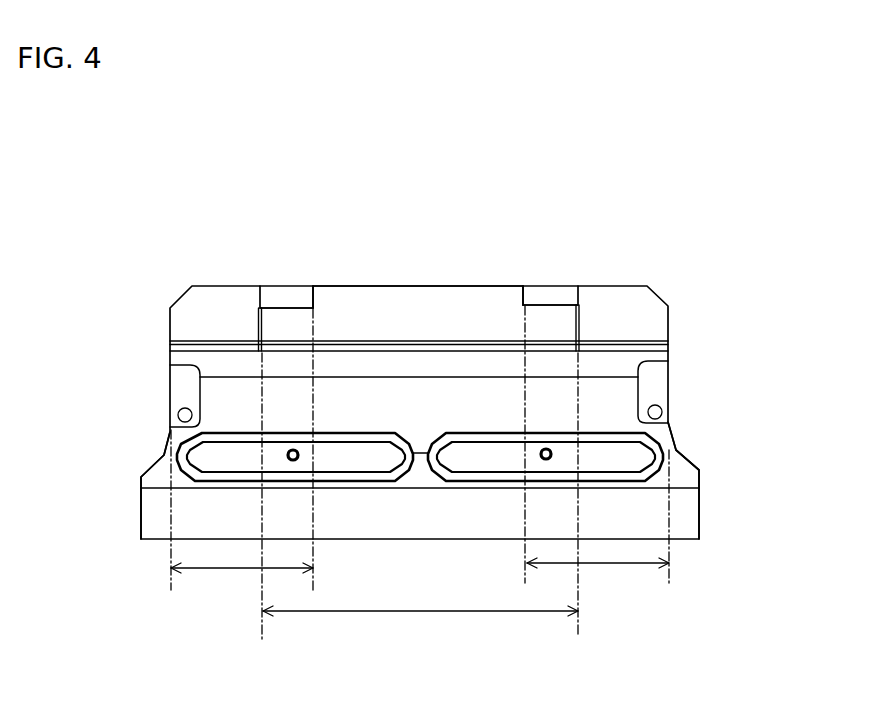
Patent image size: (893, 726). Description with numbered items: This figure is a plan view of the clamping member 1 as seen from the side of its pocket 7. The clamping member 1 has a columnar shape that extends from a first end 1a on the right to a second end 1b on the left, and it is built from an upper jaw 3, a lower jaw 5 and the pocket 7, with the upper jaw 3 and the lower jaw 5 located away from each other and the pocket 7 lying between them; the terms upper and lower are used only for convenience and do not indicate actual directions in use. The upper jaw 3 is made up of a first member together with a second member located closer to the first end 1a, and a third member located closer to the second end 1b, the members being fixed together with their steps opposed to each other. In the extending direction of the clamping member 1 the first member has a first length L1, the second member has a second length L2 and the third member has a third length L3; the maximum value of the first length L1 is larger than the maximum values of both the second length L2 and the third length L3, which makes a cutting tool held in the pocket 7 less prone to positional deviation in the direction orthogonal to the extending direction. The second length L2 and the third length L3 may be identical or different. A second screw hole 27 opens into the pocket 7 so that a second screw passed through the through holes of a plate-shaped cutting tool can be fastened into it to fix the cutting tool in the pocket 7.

The clamping member 1 is at (182, 173).
The upper jaw 3 is at (406, 300).
The lower jaw 5 is at (157, 522).
The pocket 7 is at (603, 402).
The second screw hole 27 is at (661, 414).
The first end 1a is at (700, 515).
The second end 1b is at (138, 510).
The first length L1 is at (418, 612).
The second length L2 is at (610, 563).
The third length L3 is at (213, 568).